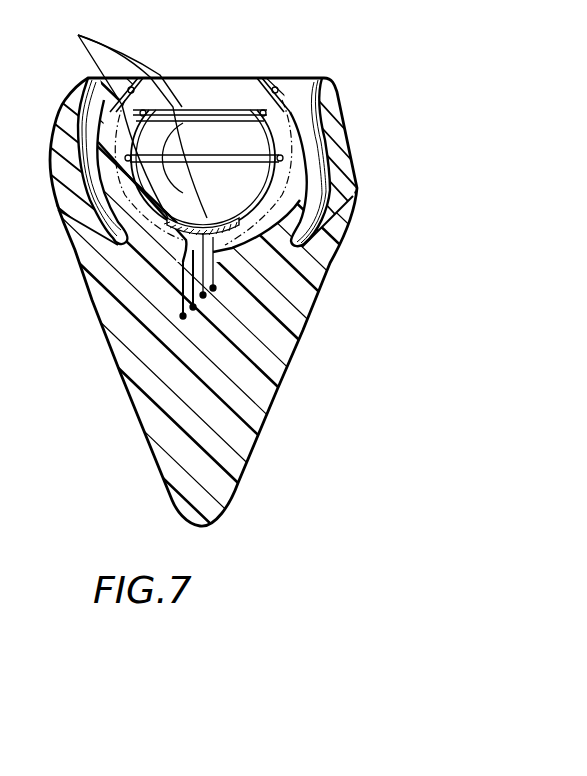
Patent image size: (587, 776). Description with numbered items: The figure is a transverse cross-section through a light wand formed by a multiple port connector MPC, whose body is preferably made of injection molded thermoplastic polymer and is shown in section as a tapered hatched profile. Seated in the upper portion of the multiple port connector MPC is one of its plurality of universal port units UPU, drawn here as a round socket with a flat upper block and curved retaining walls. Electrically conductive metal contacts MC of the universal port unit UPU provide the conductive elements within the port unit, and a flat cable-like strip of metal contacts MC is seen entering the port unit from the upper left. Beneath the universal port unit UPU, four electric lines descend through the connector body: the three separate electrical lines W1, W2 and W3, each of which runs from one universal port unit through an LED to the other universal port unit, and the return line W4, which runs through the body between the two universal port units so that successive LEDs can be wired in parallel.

The multiple port connector MPC is at (237, 433).
The universal port unit UPU is at (281, 112).
The metal contacts MC is at (118, 117).
The electrical line W1 is at (213, 288).
The electrical line W2 is at (220, 250).
The electrical line W3 is at (203, 248).
The return line W4 is at (185, 243).